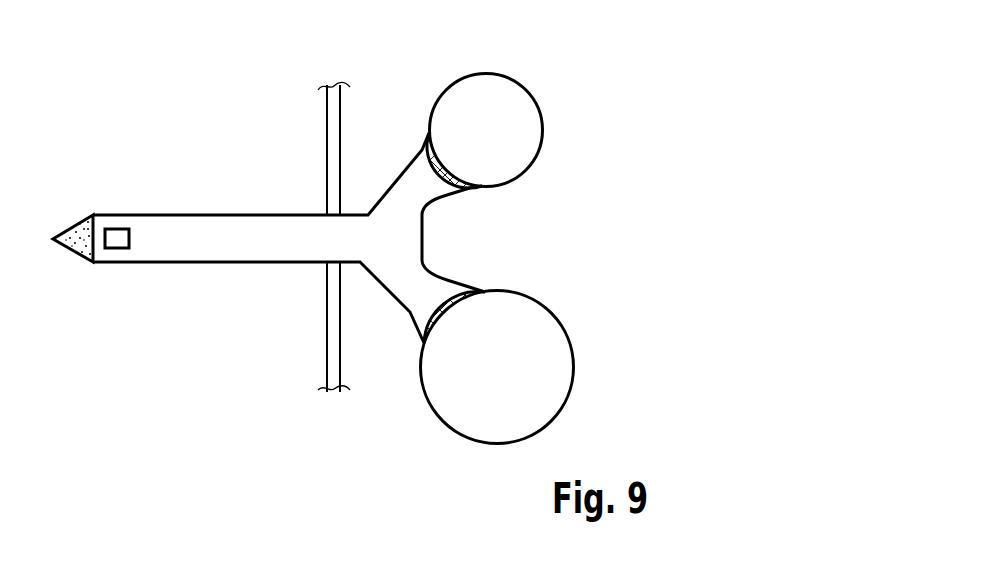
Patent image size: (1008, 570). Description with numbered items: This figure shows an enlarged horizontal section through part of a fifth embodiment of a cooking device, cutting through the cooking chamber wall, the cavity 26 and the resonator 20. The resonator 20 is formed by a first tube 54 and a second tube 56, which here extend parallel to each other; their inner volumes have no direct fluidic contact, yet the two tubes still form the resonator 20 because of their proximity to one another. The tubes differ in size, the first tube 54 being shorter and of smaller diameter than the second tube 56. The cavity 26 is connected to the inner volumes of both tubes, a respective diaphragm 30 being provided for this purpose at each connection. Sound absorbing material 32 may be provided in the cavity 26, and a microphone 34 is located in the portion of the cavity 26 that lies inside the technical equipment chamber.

The resonator 20 is at (355, 222).
The cavity 26 is at (225, 247).
The diaphragm 30 is at (427, 143).
The sound absorbing material 32 is at (75, 250).
The microphone 34 is at (118, 229).
The first tube 54 is at (542, 123).
The second tube 56 is at (573, 365).